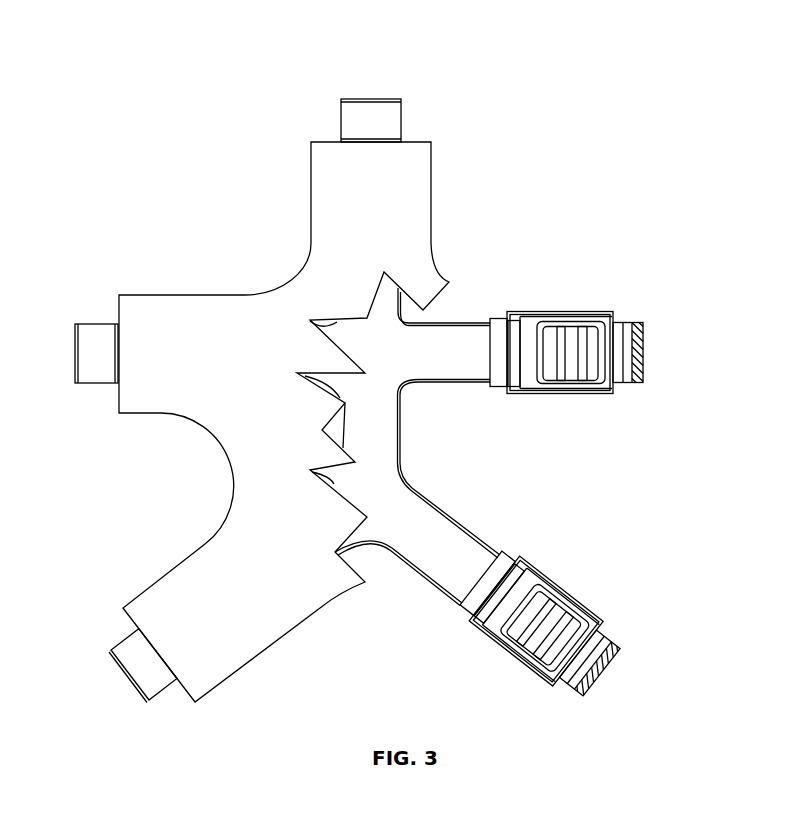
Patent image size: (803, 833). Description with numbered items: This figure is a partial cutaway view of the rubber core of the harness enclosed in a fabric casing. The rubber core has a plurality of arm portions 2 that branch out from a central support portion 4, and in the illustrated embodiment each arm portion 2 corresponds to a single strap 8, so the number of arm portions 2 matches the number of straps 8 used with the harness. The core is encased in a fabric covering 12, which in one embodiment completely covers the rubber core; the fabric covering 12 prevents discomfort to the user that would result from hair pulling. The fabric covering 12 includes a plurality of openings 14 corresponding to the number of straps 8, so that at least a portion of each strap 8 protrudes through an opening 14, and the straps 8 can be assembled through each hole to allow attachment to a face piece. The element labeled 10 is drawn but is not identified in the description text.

The arm portion 2 is at (443, 357).
The central support portion 4 is at (377, 428).
The strap 8 is at (383, 108).
The connector 10 is at (560, 313).
The fabric covering 12 is at (255, 360).
The opening 14 is at (405, 139).